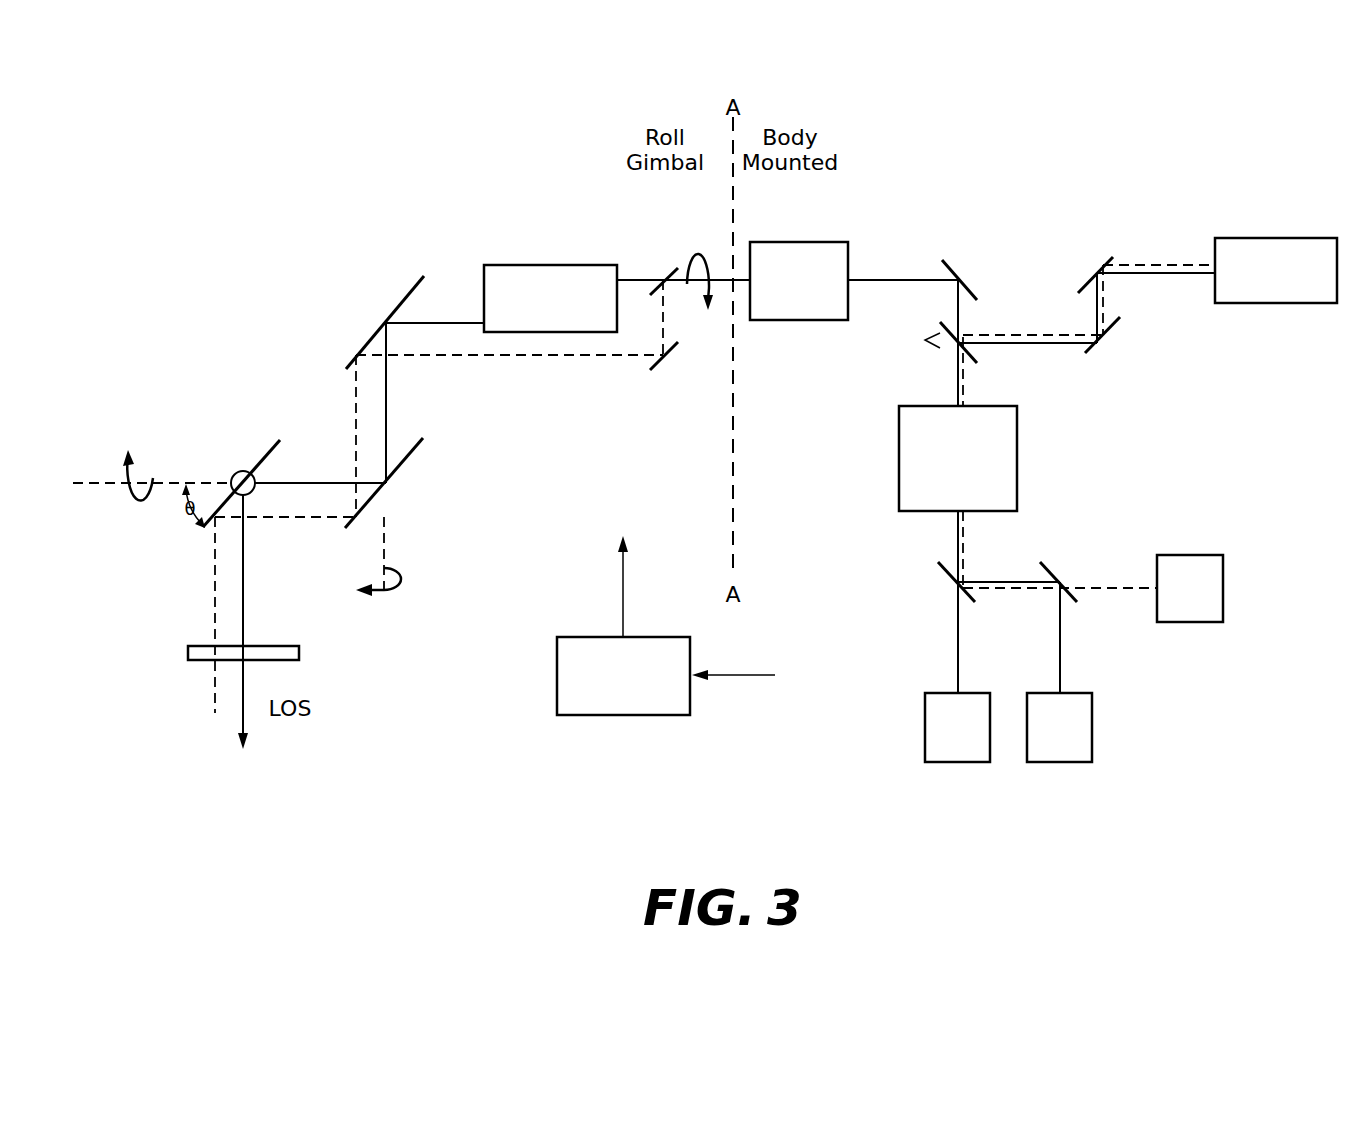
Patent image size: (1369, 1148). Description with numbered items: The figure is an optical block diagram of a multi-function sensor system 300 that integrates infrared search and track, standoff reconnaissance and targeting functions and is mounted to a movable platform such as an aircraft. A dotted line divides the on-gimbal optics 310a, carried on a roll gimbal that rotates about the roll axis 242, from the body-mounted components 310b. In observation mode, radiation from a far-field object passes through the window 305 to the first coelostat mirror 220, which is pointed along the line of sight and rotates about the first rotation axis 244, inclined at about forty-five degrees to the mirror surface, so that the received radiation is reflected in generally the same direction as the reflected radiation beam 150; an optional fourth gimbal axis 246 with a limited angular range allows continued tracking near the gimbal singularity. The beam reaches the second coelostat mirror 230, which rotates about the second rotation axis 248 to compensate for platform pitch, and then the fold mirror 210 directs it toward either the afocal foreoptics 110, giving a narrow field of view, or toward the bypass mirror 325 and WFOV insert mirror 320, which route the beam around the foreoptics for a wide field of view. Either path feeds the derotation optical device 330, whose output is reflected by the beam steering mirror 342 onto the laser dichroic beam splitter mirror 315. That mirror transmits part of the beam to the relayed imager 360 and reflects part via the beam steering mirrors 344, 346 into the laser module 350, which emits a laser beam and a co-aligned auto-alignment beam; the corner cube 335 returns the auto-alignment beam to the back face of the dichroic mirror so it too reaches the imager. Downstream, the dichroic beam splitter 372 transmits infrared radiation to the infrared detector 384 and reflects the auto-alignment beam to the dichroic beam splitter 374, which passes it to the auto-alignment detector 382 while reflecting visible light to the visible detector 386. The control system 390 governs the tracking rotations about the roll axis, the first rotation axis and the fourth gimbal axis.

The multi-function sensor system 300 is at (1220, 146).
The on-gimbal optics 310a is at (300, 221).
The body-mounted components 310b is at (950, 196).
The afocal foreoptics 110 is at (578, 265).
The reflected radiation beam 150 is at (386, 408).
The fold mirror 210 is at (413, 287).
The first coelostat mirror 220 is at (277, 445).
The second coelostat mirror 230 is at (413, 452).
The roll axis 242 is at (697, 247).
The first rotation axis 244 is at (108, 483).
The fourth gimbal axis 246 is at (232, 476).
The second rotation axis 248 is at (384, 540).
The window 305 is at (285, 642).
The laser dichroic beam splitter mirror 315 is at (940, 325).
The WFOV insert mirror 320 is at (675, 272).
The bypass mirror 325 is at (652, 363).
The derotation optical device 330 is at (838, 320).
The beam direction preserving device 335 is at (940, 347).
The beam steering mirror 342 is at (948, 264).
The beam steering mirror 344 is at (1113, 325).
The beam steering mirror 346 is at (1108, 262).
The laser module 350 is at (1253, 238).
The relayed imager 360 is at (1017, 445).
The dichroic beam splitter 372 is at (952, 572).
The dichroic beam splitter 374 is at (1050, 563).
The auto-alignment detector 382 is at (1190, 555).
The infrared detector 384 is at (925, 737).
The visible detector 386 is at (1092, 723).
The control system 390 is at (617, 715).